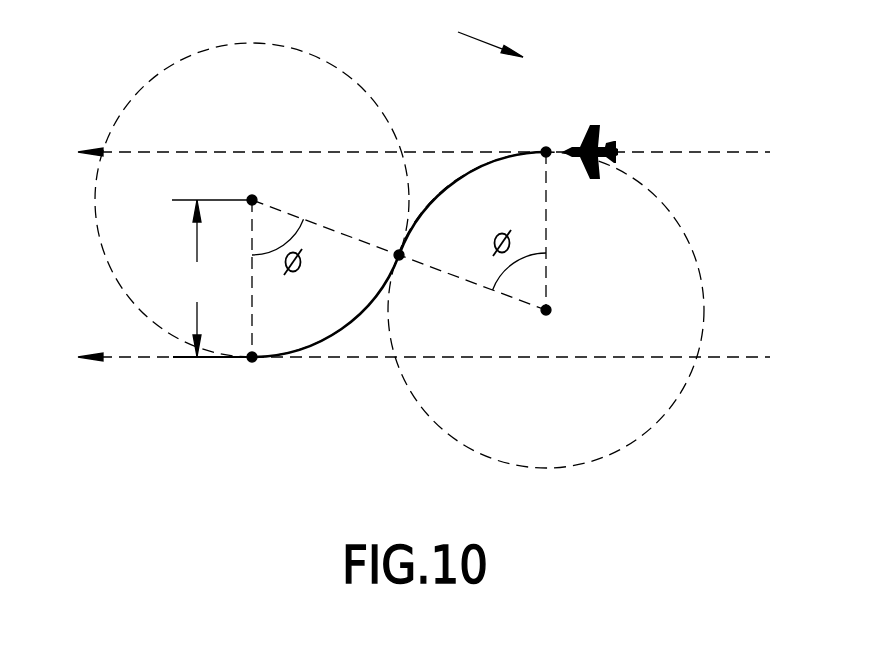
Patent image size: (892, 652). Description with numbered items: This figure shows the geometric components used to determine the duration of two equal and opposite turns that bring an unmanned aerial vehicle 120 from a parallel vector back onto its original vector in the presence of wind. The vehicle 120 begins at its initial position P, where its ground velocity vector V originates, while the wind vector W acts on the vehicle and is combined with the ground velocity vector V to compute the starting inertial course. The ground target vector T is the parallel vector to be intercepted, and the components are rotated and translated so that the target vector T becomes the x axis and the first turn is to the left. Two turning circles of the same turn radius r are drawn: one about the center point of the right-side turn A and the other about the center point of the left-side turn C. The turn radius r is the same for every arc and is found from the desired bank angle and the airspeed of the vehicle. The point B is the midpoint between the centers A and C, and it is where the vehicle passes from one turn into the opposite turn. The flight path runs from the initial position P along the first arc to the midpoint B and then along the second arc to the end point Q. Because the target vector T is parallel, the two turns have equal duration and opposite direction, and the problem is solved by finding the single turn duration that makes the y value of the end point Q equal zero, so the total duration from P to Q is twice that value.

The unmanned aerial vehicle 120 is at (593, 123).
The center point of right-side turn A is at (561, 323).
The midpoint between centers A and C B is at (389, 236).
The center point of left-side turn C is at (252, 183).
The initial position P is at (545, 131).
The end point of the two turns Q is at (252, 379).
The turn radius r is at (196, 278).
The ground velocity vector V is at (458, 118).
The ground target vector T is at (458, 327).
The wind vector W is at (447, 15).